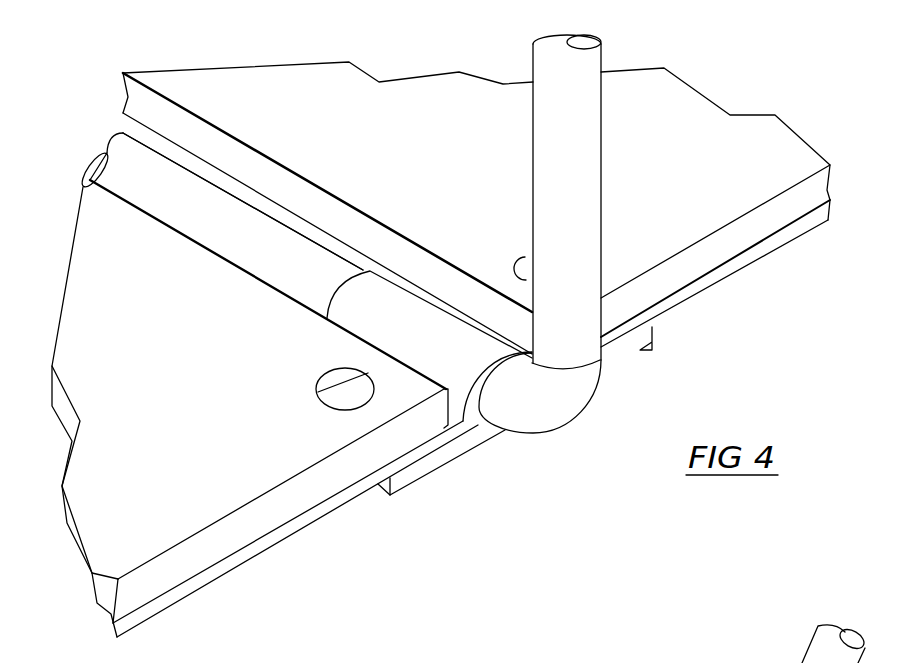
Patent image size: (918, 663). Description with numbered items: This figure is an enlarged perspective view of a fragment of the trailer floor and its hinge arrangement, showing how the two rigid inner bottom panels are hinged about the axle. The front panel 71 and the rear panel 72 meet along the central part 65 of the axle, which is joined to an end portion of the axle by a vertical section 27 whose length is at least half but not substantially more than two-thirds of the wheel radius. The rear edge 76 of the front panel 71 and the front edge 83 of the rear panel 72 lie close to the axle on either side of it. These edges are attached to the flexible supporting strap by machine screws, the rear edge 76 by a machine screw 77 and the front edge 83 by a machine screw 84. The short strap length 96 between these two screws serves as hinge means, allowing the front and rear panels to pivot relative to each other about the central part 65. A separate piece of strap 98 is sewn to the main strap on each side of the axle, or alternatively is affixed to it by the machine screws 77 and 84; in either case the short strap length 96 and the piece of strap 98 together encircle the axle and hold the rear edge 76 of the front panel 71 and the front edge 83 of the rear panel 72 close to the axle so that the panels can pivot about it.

The vertical section 27 is at (588, 226).
The central part 65 is at (198, 180).
The front panel 71 is at (468, 208).
The rear panel 72 is at (265, 408).
The rear edge 76 is at (334, 215).
The machine screw 77 is at (521, 258).
The front edge 83 is at (82, 208).
The machine screw 84 is at (336, 404).
The short strap length 96 is at (353, 292).
The piece of strap 98 is at (441, 461).